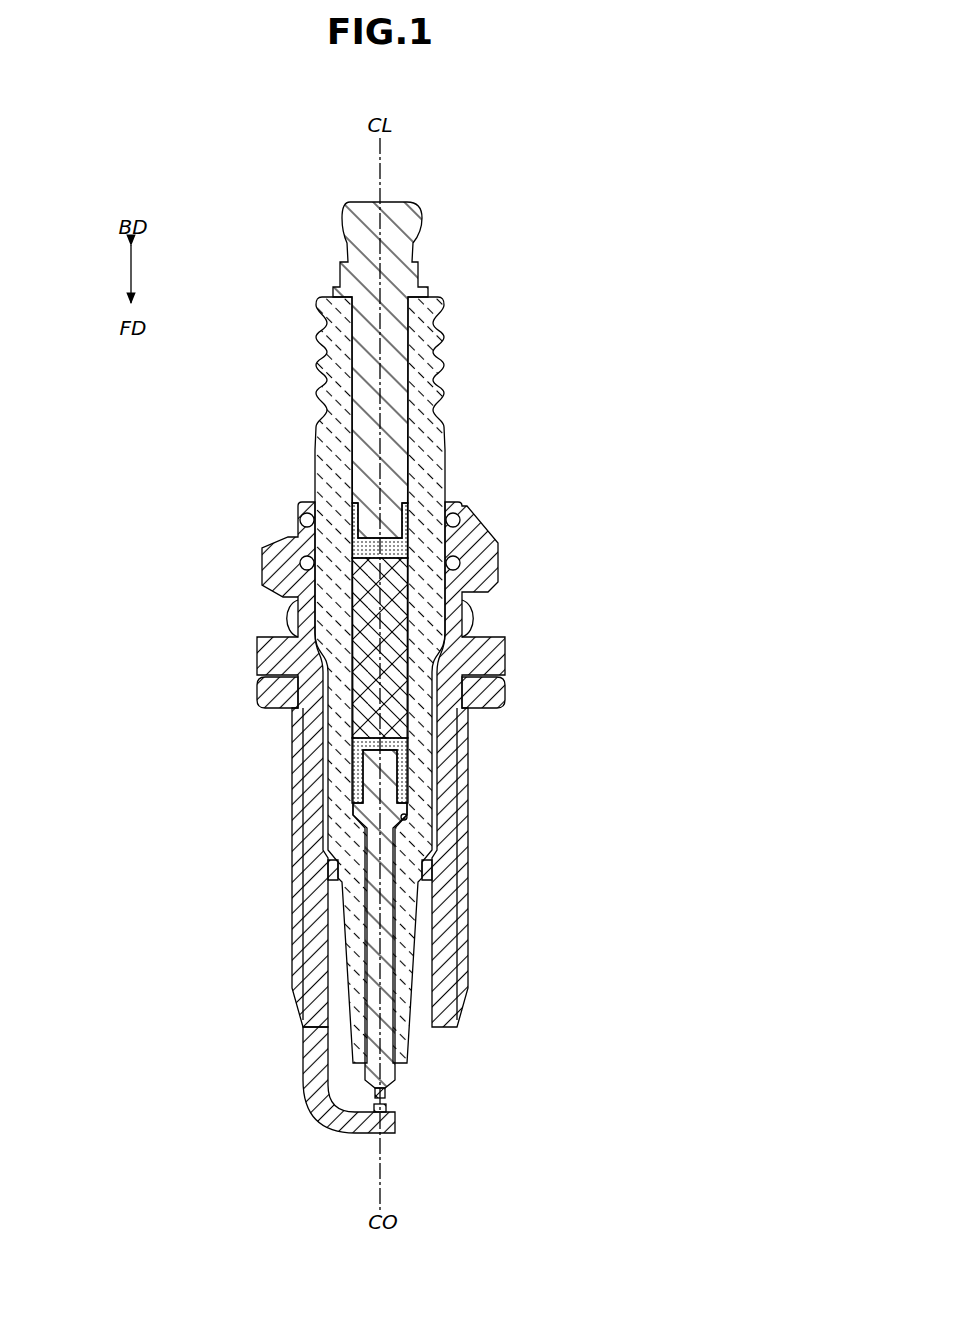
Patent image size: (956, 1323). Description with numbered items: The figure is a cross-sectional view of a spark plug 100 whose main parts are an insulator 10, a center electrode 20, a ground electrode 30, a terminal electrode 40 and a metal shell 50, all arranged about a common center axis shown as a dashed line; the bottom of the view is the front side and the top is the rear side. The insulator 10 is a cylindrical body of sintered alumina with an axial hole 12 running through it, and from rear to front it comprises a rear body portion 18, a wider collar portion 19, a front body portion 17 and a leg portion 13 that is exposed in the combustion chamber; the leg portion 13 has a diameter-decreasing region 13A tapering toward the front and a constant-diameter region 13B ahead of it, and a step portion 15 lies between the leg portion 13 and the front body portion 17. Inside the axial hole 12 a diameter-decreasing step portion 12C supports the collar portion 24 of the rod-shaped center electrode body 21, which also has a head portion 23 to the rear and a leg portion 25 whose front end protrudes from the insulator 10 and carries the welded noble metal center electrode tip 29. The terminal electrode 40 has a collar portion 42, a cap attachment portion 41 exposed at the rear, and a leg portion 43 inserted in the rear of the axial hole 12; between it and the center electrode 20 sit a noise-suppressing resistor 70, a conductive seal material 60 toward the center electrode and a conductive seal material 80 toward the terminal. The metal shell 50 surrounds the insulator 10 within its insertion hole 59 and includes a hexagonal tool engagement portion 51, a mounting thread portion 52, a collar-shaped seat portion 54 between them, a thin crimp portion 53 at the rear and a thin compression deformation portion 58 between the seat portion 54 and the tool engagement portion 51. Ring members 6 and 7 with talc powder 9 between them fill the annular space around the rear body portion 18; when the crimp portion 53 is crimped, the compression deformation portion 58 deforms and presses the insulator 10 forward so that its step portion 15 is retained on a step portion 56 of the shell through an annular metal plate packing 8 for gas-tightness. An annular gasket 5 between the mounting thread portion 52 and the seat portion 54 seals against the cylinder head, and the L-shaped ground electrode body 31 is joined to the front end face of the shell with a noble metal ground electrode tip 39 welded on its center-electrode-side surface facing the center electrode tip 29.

The spark plug 100 is at (479, 159).
The insulator 10 is at (457, 411).
The axial hole 12 is at (356, 362).
The diameter-decreasing step portion 12C is at (405, 812).
The leg portion 13 is at (333, 925).
The diameter-decreasing region 13A is at (415, 963).
The constant-diameter region 13B is at (407, 1045).
The front body portion 17 is at (337, 745).
The rear body portion 18 is at (320, 440).
The head portion 23 is at (355, 786).
The collar portion 24 is at (352, 820).
The leg portion 25 is at (375, 905).
The diameter-decreasing step portion 56 is at (330, 860).
The terminal electrode 40 is at (435, 225).
The cap attachment portion 41 is at (349, 226).
The collar portion 42 is at (333, 290).
The leg portion 43 is at (372, 344).
The conductive seal material 80 is at (350, 548).
The resistor 70 is at (378, 636).
The conductive seal material 60 is at (355, 770).
The center electrode 20 is at (409, 1078).
The center electrode body 21 is at (400, 770).
The center electrode tip 29 is at (388, 1093).
The metal shell 50 is at (537, 632).
The tool engagement portion 51 is at (270, 562).
The mounting thread portion 52 is at (300, 727).
The crimp portion 53 is at (300, 497).
The seat portion 54 is at (265, 657).
The compression deformation portion 58 is at (298, 620).
The insertion hole 59 is at (290, 678).
The collar portion 19 is at (297, 607).
The ring member 6 is at (300, 520).
The talc powder 9 is at (305, 536).
The ring member 7 is at (305, 565).
The gasket 5 is at (262, 692).
The metal plate packing 8 is at (425, 860).
The step portion 15 is at (420, 832).
The ground electrode 30 is at (300, 1119).
The ground electrode body 31 is at (370, 1132).
The ground electrode tip 39 is at (392, 1110).